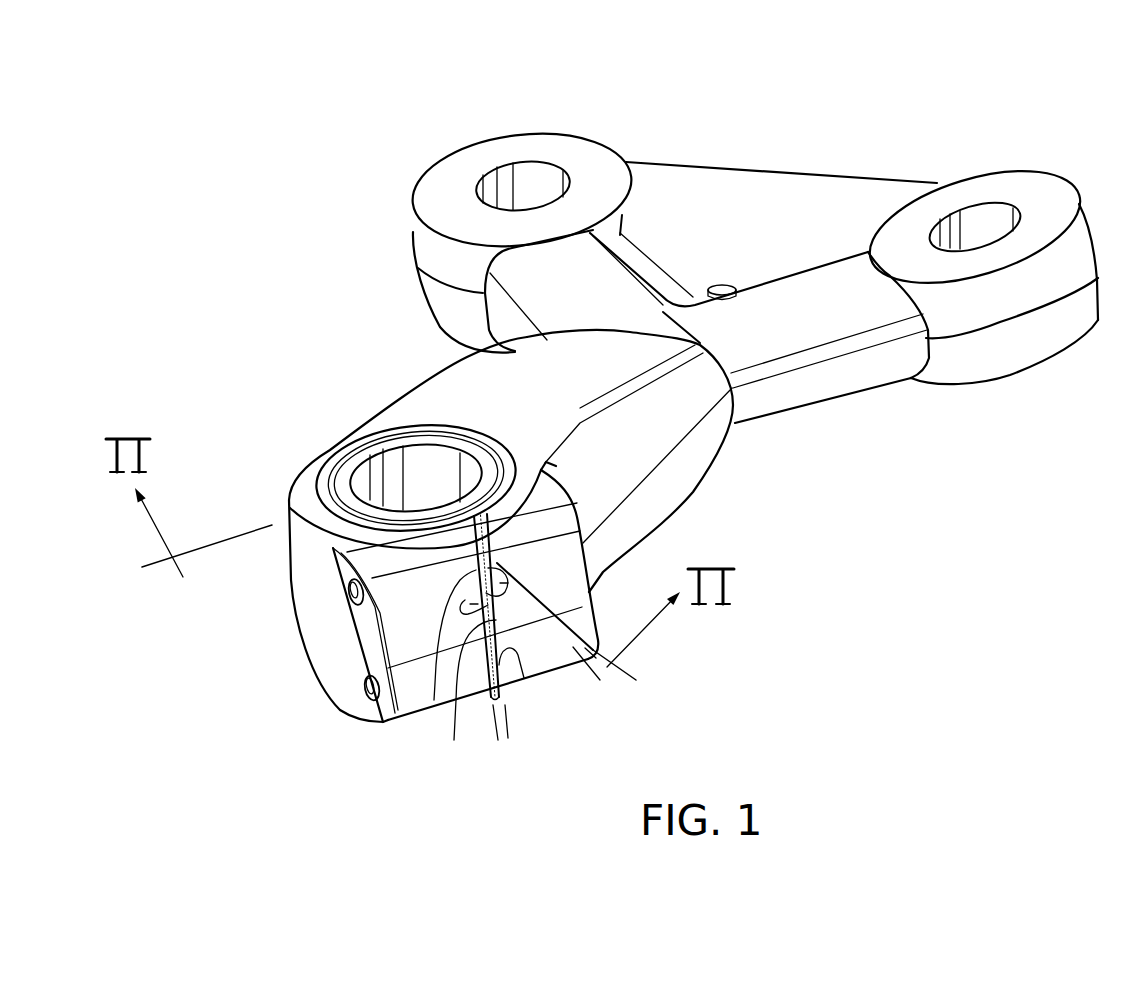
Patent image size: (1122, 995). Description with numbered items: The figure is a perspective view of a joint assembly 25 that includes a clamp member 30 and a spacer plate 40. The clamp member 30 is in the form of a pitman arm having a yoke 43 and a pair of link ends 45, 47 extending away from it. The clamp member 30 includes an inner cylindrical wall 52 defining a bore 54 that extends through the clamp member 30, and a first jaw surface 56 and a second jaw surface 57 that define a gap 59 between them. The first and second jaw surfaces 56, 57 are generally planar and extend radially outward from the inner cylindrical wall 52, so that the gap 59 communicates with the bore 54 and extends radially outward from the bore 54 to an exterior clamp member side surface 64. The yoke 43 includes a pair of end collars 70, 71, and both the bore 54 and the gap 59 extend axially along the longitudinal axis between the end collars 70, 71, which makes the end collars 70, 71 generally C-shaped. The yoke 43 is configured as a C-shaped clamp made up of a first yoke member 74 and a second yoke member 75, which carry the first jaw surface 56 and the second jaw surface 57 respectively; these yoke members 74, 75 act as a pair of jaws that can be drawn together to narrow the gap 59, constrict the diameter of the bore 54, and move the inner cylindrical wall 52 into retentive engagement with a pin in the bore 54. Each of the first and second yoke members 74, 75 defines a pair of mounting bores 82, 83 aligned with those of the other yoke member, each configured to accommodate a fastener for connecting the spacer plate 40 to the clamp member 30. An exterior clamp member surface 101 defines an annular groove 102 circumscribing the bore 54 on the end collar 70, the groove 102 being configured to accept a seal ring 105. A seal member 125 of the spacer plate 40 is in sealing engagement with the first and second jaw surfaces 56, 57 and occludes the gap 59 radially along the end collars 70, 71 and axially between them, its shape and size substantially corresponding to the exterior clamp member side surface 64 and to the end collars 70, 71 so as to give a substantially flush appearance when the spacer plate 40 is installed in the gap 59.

The joint assembly 25 is at (172, 183).
The clamp member 30 is at (297, 575).
The spacer plate 40 is at (454, 740).
The yoke 43 is at (357, 635).
The link end 45 is at (460, 177).
The link end 47 is at (967, 193).
The inner cylindrical wall 52 is at (343, 465).
The bore 54 is at (421, 470).
The first jaw surface 56 is at (434, 700).
The second jaw surface 57 is at (498, 596).
The gap 59 is at (508, 745).
The exterior clamp member side surface 64 is at (425, 627).
The end collar 70 is at (297, 487).
The end collar 71 is at (587, 667).
The first yoke member 74 is at (407, 700).
The second yoke member 75 is at (596, 658).
The mounting bore 82 is at (348, 603).
The mounting bore 83 is at (366, 727).
The exterior clamp member surface 101 is at (304, 492).
The annular groove 102 is at (290, 507).
The seal ring 105 is at (304, 466).
The seal member 125 is at (462, 731).